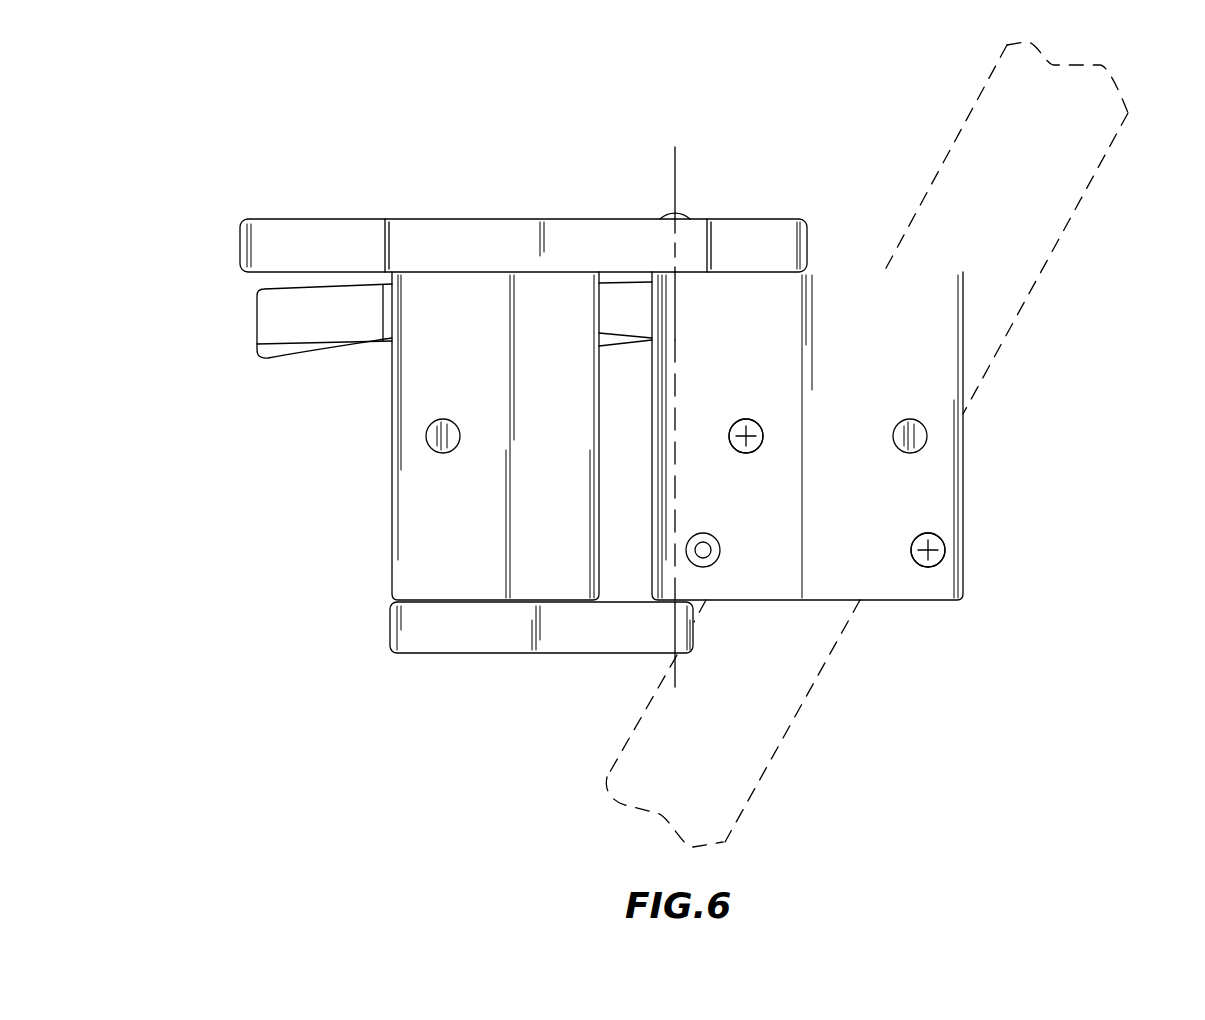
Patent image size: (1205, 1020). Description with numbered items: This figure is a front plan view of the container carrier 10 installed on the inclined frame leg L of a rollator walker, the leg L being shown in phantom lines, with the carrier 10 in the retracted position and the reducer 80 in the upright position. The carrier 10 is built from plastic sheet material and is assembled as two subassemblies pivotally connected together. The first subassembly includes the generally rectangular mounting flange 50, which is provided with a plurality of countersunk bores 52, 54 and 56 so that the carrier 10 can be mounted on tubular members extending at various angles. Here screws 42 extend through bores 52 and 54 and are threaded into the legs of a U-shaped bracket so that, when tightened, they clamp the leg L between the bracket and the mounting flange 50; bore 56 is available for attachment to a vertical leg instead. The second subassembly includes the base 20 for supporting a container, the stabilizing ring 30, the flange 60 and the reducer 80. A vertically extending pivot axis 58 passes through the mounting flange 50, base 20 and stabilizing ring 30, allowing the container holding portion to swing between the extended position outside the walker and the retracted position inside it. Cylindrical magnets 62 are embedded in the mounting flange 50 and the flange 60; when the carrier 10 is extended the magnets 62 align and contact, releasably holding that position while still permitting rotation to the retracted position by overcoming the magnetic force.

The container carrier 10 is at (242, 521).
The base 20 is at (488, 628).
The stabilizing ring 30 is at (573, 228).
The screws 42 is at (746, 418).
The mounting flange 50 is at (925, 380).
The countersunk bore 52 is at (938, 543).
The countersunk bore 54 is at (752, 454).
The countersunk bore 56 is at (705, 553).
The pivot axis 58 is at (675, 188).
The flange 60 is at (423, 547).
The magnets 62 is at (427, 436).
The reducer 80 is at (277, 327).
The frame leg L is at (1050, 207).